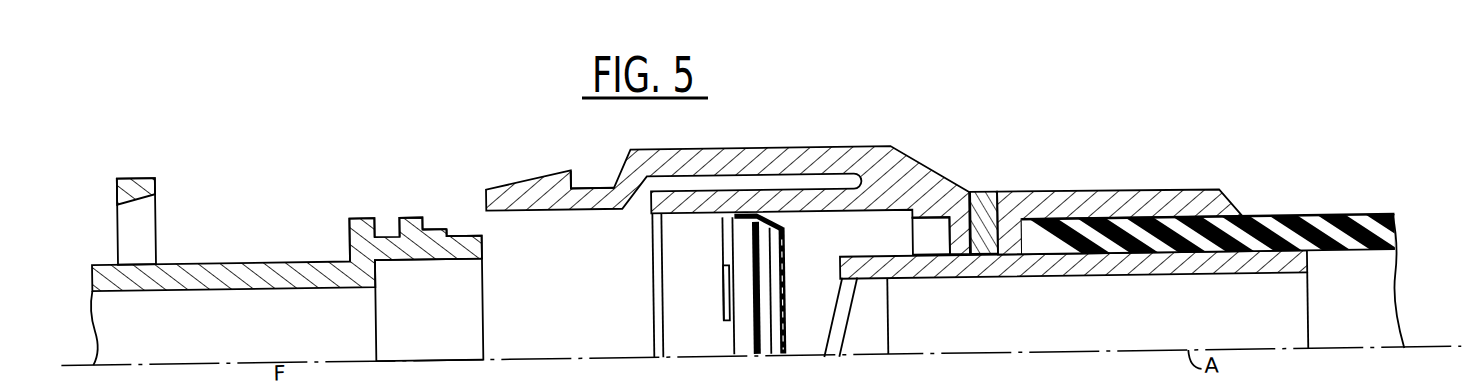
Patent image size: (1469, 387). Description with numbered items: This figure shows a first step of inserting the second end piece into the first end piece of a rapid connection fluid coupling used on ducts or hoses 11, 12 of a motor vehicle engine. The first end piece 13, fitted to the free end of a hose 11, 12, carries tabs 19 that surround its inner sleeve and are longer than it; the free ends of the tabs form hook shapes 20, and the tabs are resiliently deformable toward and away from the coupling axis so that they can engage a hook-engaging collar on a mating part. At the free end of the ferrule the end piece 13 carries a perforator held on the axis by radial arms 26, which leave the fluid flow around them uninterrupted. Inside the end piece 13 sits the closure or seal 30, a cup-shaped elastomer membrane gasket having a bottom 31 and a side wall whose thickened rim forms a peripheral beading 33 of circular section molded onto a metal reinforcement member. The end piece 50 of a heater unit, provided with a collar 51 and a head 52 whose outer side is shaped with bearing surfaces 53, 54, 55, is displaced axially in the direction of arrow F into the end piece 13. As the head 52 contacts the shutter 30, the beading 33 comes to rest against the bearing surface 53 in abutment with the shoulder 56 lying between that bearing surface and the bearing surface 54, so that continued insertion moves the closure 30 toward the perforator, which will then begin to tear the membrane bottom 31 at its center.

The hose 11 is at (1220, 258).
The hose 12 is at (1288, 223).
The end piece 13 is at (896, 235).
The tabs 19 is at (694, 156).
The hook shapes 20 is at (607, 172).
The radial arms 26 is at (850, 312).
The closure or seal 30 is at (788, 266).
The bottom 31 is at (791, 290).
The peripheral beading 33 is at (753, 215).
The end piece 50 is at (265, 250).
The collar 51 is at (156, 181).
The head 52 is at (410, 257).
The bearing surface 53 is at (463, 233).
The bearing surface 54 is at (437, 225).
The bearing surface 55 is at (392, 227).
The shoulder 56 is at (450, 255).